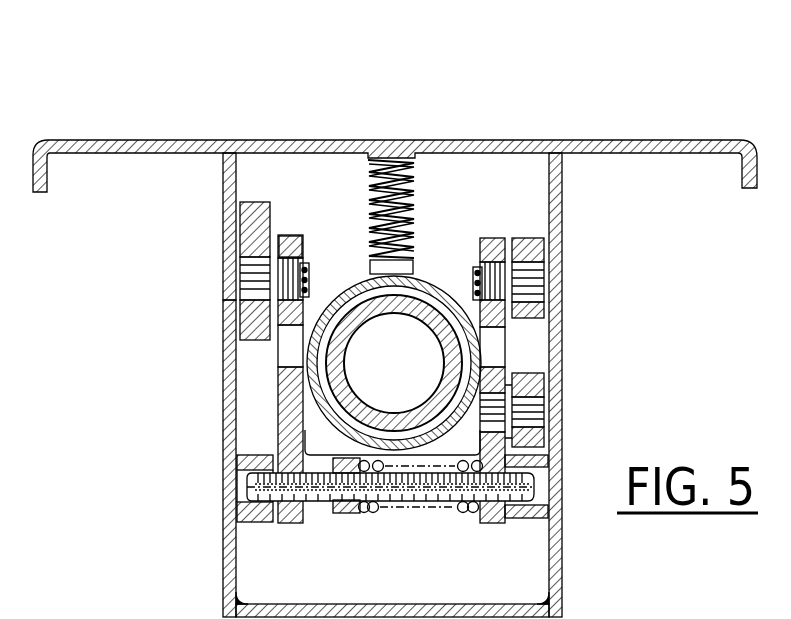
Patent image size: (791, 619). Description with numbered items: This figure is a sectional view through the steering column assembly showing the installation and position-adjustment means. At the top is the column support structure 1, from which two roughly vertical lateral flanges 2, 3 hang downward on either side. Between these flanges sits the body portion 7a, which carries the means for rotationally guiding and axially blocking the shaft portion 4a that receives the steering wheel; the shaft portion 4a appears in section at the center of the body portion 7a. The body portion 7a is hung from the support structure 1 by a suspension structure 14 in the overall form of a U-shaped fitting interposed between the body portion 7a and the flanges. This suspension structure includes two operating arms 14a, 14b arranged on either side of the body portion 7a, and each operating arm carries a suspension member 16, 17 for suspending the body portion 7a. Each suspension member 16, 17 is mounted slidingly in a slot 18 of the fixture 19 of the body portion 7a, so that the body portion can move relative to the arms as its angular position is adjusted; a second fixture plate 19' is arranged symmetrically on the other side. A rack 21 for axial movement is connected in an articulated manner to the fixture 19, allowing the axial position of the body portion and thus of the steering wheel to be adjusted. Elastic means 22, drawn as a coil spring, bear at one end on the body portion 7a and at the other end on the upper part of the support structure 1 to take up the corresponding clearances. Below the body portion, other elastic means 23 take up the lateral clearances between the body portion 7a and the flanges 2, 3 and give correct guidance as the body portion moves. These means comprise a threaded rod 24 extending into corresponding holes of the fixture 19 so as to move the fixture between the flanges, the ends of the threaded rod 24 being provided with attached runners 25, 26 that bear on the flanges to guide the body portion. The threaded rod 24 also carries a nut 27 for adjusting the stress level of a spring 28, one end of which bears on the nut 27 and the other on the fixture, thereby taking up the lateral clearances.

The column support structure 1 is at (415, 125).
The lateral flange 2 is at (565, 297).
The lateral flange 3 is at (210, 210).
The shaft portion 4a is at (356, 396).
The body portion 7a is at (378, 283).
The suspension structure 14 is at (225, 344).
The operating arm 14a is at (237, 268).
The operating arm 14b is at (535, 230).
The suspension member 16 is at (308, 262).
The suspension member 17 is at (472, 278).
The slot 18 is at (292, 262).
The fixture 19 is at (229, 379).
The right support plate 19' is at (553, 380).
The rack 21 is at (525, 377).
The elastic means 22 is at (367, 193).
The elastic means 23 is at (342, 522).
The threaded rod 24 is at (323, 522).
The runner 25 is at (520, 522).
The runner 26 is at (258, 524).
The nut 27 is at (356, 522).
The spring 28 is at (477, 522).